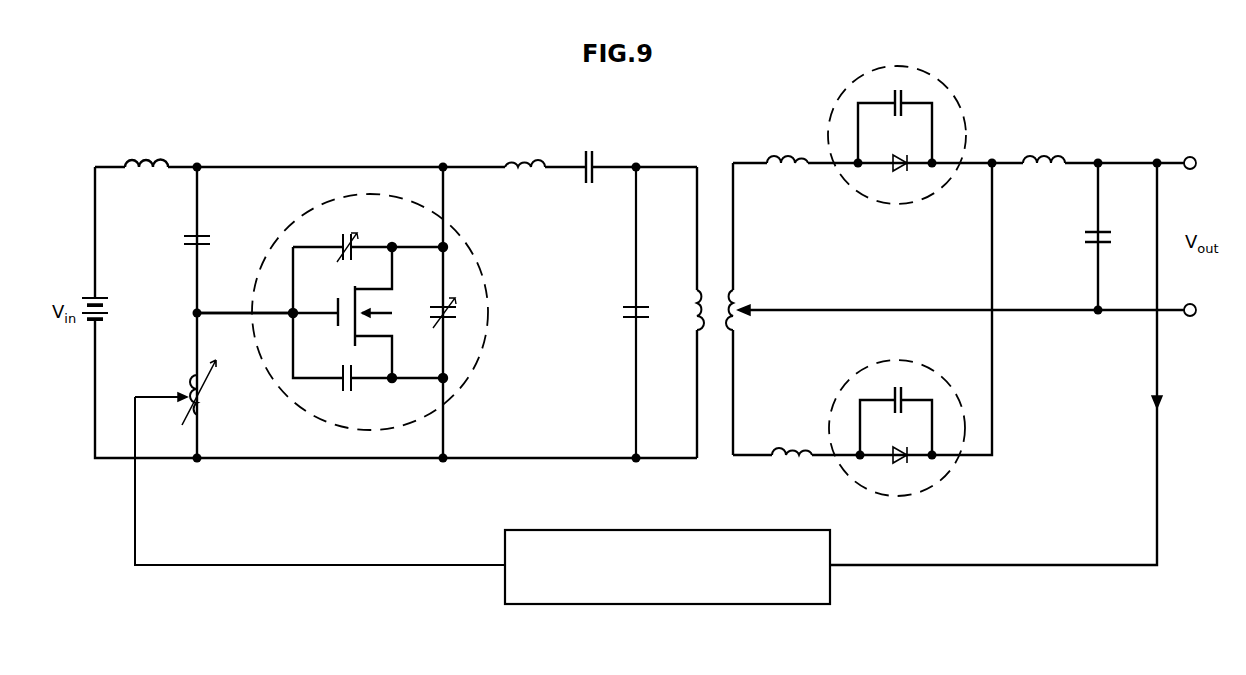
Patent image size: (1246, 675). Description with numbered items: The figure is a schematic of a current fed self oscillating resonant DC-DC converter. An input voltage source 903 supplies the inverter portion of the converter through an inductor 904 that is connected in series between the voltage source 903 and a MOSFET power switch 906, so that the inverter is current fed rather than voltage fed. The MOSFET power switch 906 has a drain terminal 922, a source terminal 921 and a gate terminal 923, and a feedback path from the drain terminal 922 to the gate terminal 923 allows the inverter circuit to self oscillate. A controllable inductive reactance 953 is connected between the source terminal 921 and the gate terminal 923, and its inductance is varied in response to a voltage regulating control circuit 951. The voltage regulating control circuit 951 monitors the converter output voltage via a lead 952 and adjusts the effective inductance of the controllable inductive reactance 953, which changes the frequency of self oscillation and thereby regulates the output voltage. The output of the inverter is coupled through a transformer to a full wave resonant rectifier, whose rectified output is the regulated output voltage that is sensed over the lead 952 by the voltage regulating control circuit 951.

The inductor 904 is at (146, 150).
The input voltage source 903 is at (116, 311).
The gate terminal 923 is at (213, 312).
The controllable inductive reactance 953 is at (320, 462).
The drain terminal 922 is at (443, 195).
The source terminal 921 is at (443, 434).
The MOSFET power switch 906 is at (478, 262).
The voltage regulating control circuit 951 is at (530, 530).
The lead 952 is at (955, 565).